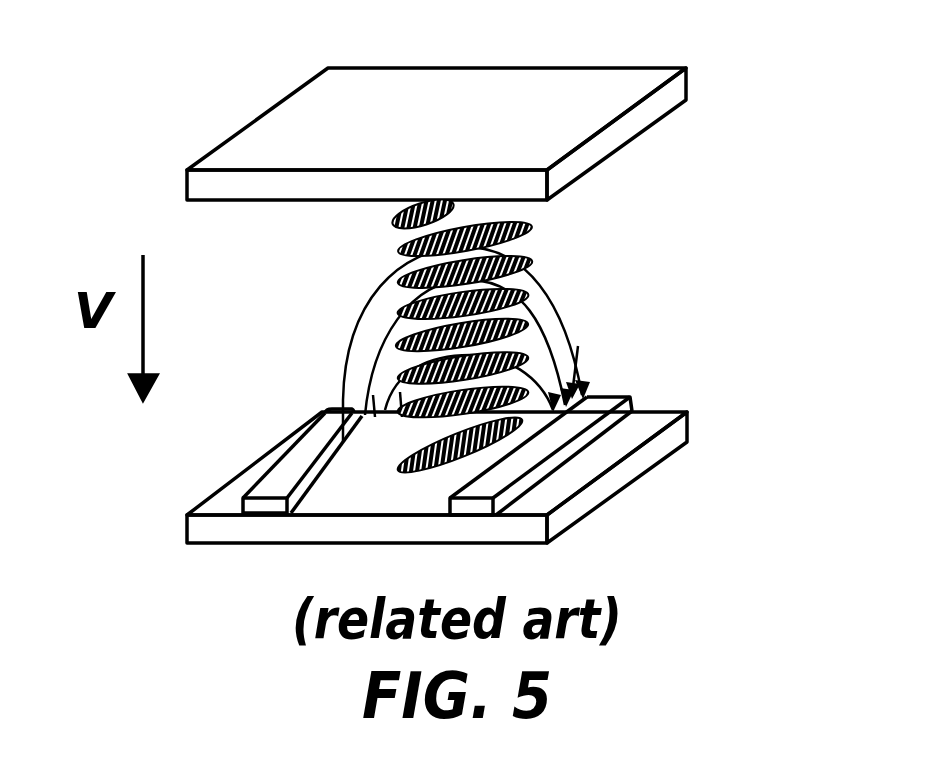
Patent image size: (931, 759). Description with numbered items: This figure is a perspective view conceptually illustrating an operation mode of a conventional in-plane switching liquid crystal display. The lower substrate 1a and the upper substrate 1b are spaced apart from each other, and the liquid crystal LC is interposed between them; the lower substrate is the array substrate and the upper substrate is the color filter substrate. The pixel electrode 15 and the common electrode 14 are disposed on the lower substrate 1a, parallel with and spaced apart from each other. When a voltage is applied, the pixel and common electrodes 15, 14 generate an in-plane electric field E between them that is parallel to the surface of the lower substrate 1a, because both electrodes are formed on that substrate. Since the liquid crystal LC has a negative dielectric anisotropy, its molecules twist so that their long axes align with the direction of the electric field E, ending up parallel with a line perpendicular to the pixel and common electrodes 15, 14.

The lower substrate 1a is at (668, 450).
The upper substrate 1b is at (687, 85).
The common electrode 14 is at (612, 397).
The pixel electrode 15 is at (298, 446).
The electric field E is at (575, 345).
The liquid crystal LC is at (532, 237).